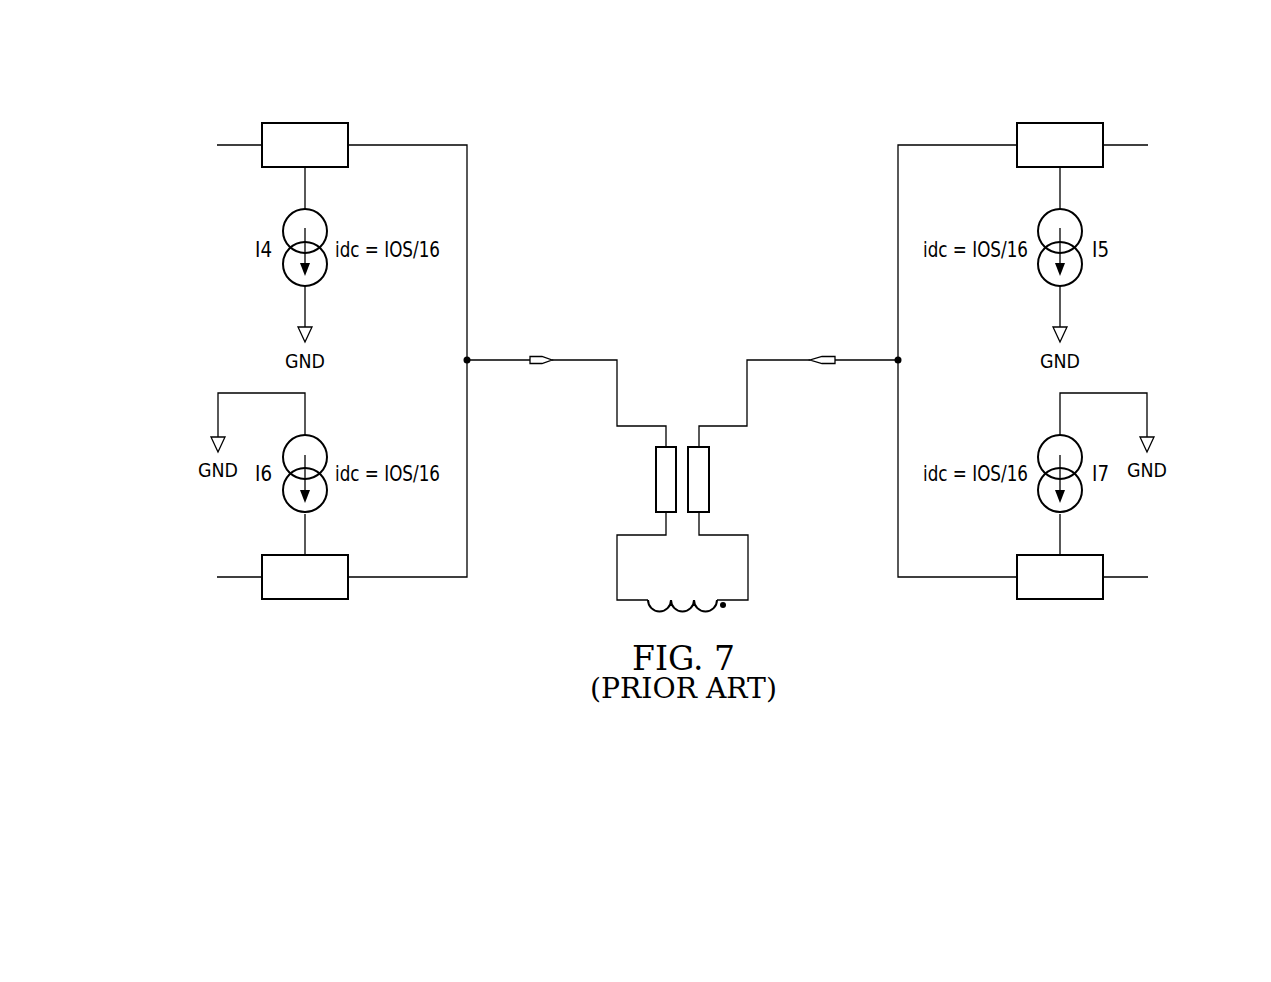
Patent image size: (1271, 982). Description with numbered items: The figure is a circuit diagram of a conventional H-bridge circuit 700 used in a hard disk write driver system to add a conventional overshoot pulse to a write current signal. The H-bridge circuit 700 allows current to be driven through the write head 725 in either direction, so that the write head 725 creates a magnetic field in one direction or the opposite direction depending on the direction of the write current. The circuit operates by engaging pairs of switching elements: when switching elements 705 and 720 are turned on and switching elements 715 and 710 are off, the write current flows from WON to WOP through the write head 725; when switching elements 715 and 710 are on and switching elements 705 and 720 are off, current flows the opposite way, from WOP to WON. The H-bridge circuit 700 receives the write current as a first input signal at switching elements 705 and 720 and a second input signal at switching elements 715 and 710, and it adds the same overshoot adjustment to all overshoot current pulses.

The H-bridge circuit 700 is at (429, 74).
The switching element 705 is at (293, 122).
The switching element 710 is at (1072, 122).
The switching element 715 is at (293, 600).
The switching element 720 is at (1072, 600).
The write head 725 is at (680, 406).